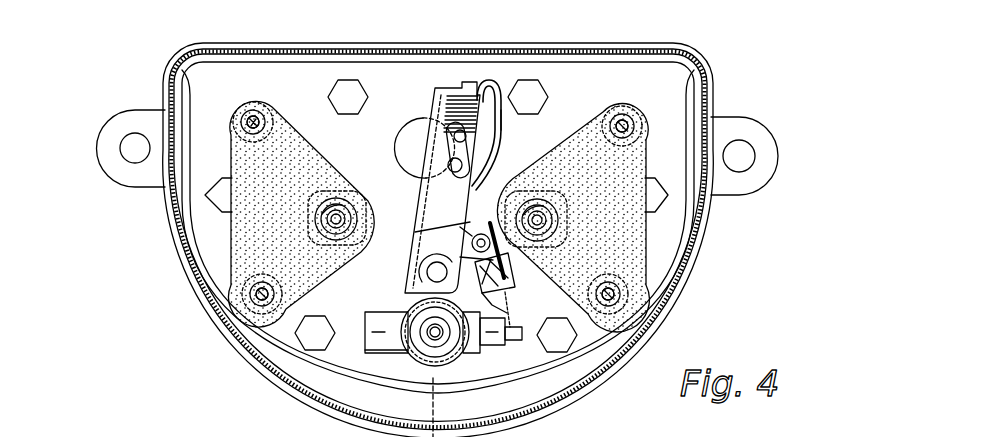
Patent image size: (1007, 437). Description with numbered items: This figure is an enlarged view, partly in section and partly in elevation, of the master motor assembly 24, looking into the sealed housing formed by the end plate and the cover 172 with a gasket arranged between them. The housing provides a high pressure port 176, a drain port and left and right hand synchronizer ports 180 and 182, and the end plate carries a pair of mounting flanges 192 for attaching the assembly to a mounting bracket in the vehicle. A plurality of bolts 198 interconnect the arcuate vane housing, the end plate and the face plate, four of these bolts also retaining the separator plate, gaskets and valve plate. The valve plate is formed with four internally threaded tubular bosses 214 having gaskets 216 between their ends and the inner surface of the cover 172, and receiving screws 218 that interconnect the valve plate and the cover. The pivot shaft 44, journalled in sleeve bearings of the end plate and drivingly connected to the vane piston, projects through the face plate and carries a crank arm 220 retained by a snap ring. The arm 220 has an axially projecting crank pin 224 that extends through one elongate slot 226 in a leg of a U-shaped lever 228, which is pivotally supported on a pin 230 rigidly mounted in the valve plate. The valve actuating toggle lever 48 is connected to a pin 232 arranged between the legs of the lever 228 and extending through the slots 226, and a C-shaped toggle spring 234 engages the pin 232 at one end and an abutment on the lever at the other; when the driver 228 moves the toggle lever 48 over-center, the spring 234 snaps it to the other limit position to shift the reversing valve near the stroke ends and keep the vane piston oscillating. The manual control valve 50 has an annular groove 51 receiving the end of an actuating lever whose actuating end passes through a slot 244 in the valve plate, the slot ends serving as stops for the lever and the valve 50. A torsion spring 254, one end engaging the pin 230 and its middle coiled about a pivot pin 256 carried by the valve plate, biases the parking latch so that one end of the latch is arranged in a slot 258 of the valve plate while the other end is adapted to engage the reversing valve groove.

The master motor assembly 24 is at (716, 68).
The pivot shaft 44 is at (420, 150).
The valve actuating toggle lever 48 is at (440, 150).
The manual control valve 50 is at (523, 337).
The annular groove 51 is at (509, 348).
The cover 172 is at (182, 69).
The high pressure port 176 is at (447, 341).
The left hand synchronizer port 180 is at (337, 243).
The right hand synchronizer port 182 is at (552, 224).
The mounting flanges 192 is at (118, 140).
The bolts 198 is at (348, 88).
The internally threaded tubular bosses 214 is at (253, 113).
The gaskets 216 is at (296, 142).
The screws 218 is at (251, 119).
The crank arm 220 is at (427, 128).
The crank pin 224 is at (590, 103).
The elongate slot 226 is at (501, 136).
The U-shaped lever 228 is at (481, 106).
The pin 230 is at (428, 272).
The pin 232 is at (455, 163).
The C-shaped toggle spring 234 is at (488, 110).
The slot 244 is at (600, 292).
The torsion spring 254 is at (470, 241).
The pivot pin 256 is at (500, 253).
The slot 258 is at (512, 293).